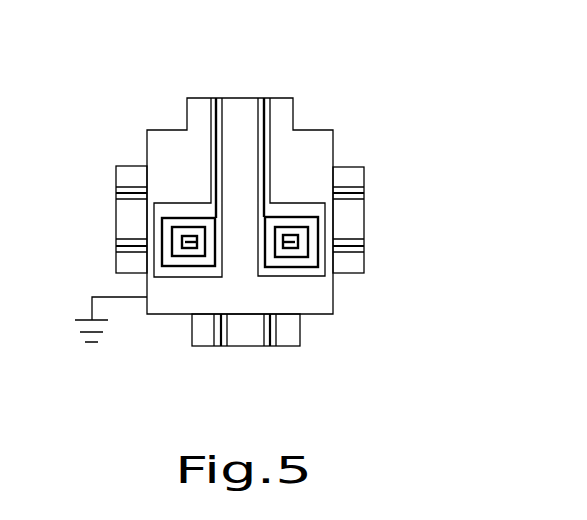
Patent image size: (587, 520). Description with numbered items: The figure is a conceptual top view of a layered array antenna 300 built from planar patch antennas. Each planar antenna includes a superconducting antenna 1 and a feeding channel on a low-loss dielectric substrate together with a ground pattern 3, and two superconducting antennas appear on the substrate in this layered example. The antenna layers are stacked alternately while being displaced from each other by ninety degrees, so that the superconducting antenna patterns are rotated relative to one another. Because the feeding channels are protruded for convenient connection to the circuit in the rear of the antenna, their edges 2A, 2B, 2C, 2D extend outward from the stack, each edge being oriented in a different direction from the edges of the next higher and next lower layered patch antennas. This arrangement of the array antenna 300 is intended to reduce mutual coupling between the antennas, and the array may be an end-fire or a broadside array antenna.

The array antenna 300 is at (90, 85).
The superconducting antenna 1 is at (283, 212).
The edge of feeding channel 2A is at (222, 98).
The edge of feeding channel 2B is at (365, 182).
The edge of feeding channel 2C is at (277, 347).
The edge of feeding channel 2D is at (116, 239).
The ground pattern 3 is at (322, 305).